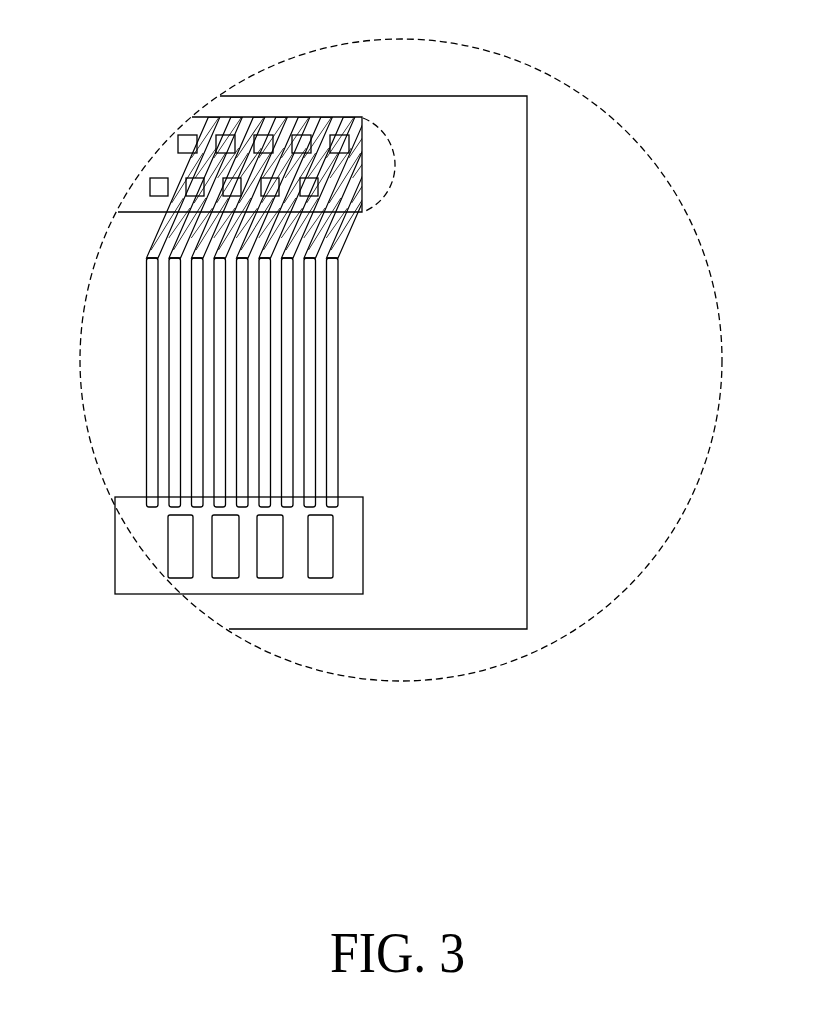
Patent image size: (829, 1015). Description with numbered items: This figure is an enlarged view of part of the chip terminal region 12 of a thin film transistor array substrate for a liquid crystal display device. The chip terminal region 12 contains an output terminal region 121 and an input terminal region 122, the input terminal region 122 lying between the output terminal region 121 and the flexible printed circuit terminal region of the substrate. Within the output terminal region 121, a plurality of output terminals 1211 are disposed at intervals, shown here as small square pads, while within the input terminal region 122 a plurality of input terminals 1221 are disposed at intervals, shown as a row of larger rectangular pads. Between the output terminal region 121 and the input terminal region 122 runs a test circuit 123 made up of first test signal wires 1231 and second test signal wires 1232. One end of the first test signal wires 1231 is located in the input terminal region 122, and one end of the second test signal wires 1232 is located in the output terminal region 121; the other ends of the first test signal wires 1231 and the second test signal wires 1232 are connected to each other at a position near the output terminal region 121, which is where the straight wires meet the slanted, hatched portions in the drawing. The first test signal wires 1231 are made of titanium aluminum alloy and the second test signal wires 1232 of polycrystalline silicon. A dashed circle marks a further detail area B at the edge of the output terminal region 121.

The chip terminal region 12 is at (527, 306).
The output terminal region 121 is at (240, 115).
The output terminals 1211 is at (182, 133).
The second test signal wires 1232 is at (155, 240).
The first test signal wires 1231 is at (147, 382).
The test circuit 123 is at (173, 382).
The input terminal region 122 is at (239, 599).
The input terminals 1221 is at (183, 565).
The detail region B is at (388, 140).